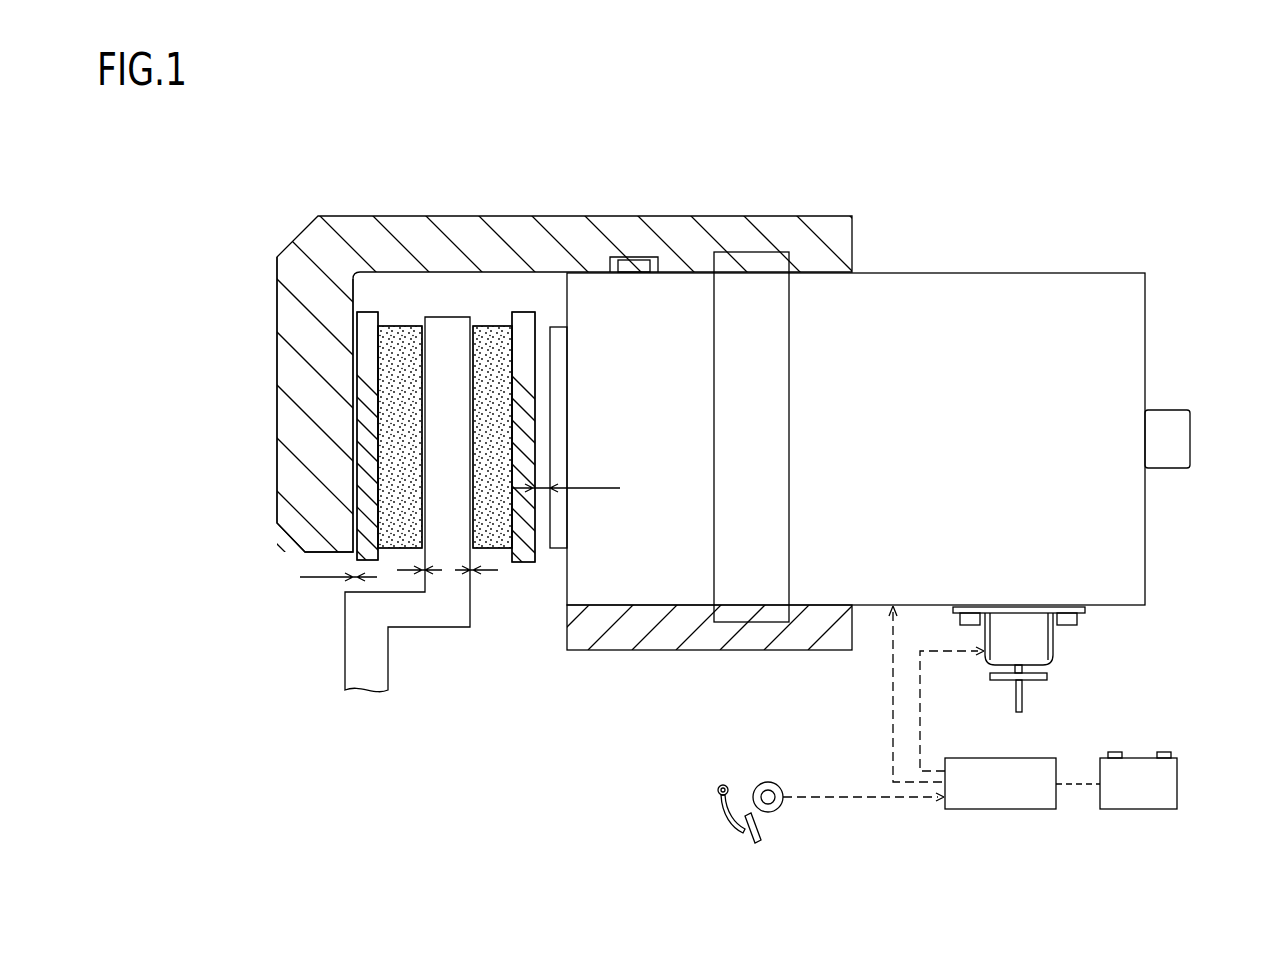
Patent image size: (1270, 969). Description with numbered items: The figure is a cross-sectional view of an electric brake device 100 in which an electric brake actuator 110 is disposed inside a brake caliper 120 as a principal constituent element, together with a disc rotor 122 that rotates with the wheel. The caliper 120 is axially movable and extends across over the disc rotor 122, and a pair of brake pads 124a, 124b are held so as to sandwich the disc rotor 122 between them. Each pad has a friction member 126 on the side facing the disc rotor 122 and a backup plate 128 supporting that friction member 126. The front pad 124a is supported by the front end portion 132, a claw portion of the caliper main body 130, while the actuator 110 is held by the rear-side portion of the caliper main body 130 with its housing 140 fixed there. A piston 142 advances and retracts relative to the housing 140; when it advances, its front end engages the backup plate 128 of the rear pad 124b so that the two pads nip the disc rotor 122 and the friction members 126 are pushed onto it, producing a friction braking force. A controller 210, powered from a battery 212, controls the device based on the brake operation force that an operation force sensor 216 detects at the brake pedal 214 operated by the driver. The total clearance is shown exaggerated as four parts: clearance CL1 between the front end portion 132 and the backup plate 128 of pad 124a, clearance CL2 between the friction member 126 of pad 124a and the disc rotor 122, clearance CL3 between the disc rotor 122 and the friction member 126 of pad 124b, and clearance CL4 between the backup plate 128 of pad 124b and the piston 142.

The electric brake device 100 is at (877, 115).
The electric brake actuator 110 is at (914, 247).
The brake caliper 120 is at (581, 132).
The disc rotor 122 is at (355, 630).
The brake pad 124a is at (390, 292).
The brake pad 124b is at (502, 292).
The friction member 126 is at (403, 326).
The backup plate 128 is at (359, 312).
The caliper main body 130 is at (603, 220).
The front end portion 132 is at (290, 465).
The housing 140 is at (1070, 280).
The piston 142 is at (558, 548).
The controller 210 is at (1022, 757).
The battery 212 is at (1170, 757).
The brake pedal 214 is at (722, 803).
The operation force sensor 216 is at (767, 781).
The clearance CL1 is at (338, 568).
The clearance CL2 is at (423, 578).
The clearance CL3 is at (472, 578).
The clearance CL4 is at (566, 479).